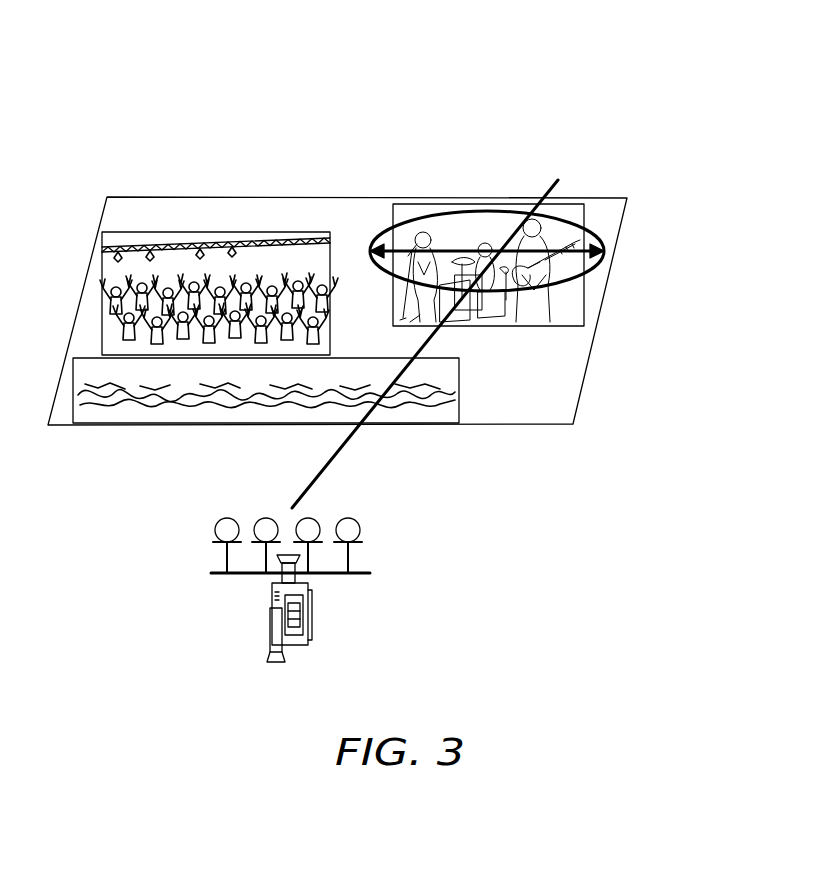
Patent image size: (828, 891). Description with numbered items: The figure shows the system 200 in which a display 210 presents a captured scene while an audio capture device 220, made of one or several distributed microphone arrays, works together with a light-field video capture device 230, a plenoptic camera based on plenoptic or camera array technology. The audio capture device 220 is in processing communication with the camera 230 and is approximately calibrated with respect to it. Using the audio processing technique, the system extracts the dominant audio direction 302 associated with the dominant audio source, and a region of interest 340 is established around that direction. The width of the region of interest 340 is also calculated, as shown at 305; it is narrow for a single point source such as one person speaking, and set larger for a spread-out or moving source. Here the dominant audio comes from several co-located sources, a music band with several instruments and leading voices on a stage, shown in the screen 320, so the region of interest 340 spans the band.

The system 200 is at (405, 656).
The display 210 is at (273, 197).
The audio capture device 220 is at (216, 524).
The light-field video capture device 230 is at (270, 622).
The dominant audio direction 302 is at (548, 187).
The width of the region of interest 305 is at (560, 240).
The screen showing music band 320 is at (503, 320).
The region of interest 340 is at (567, 285).